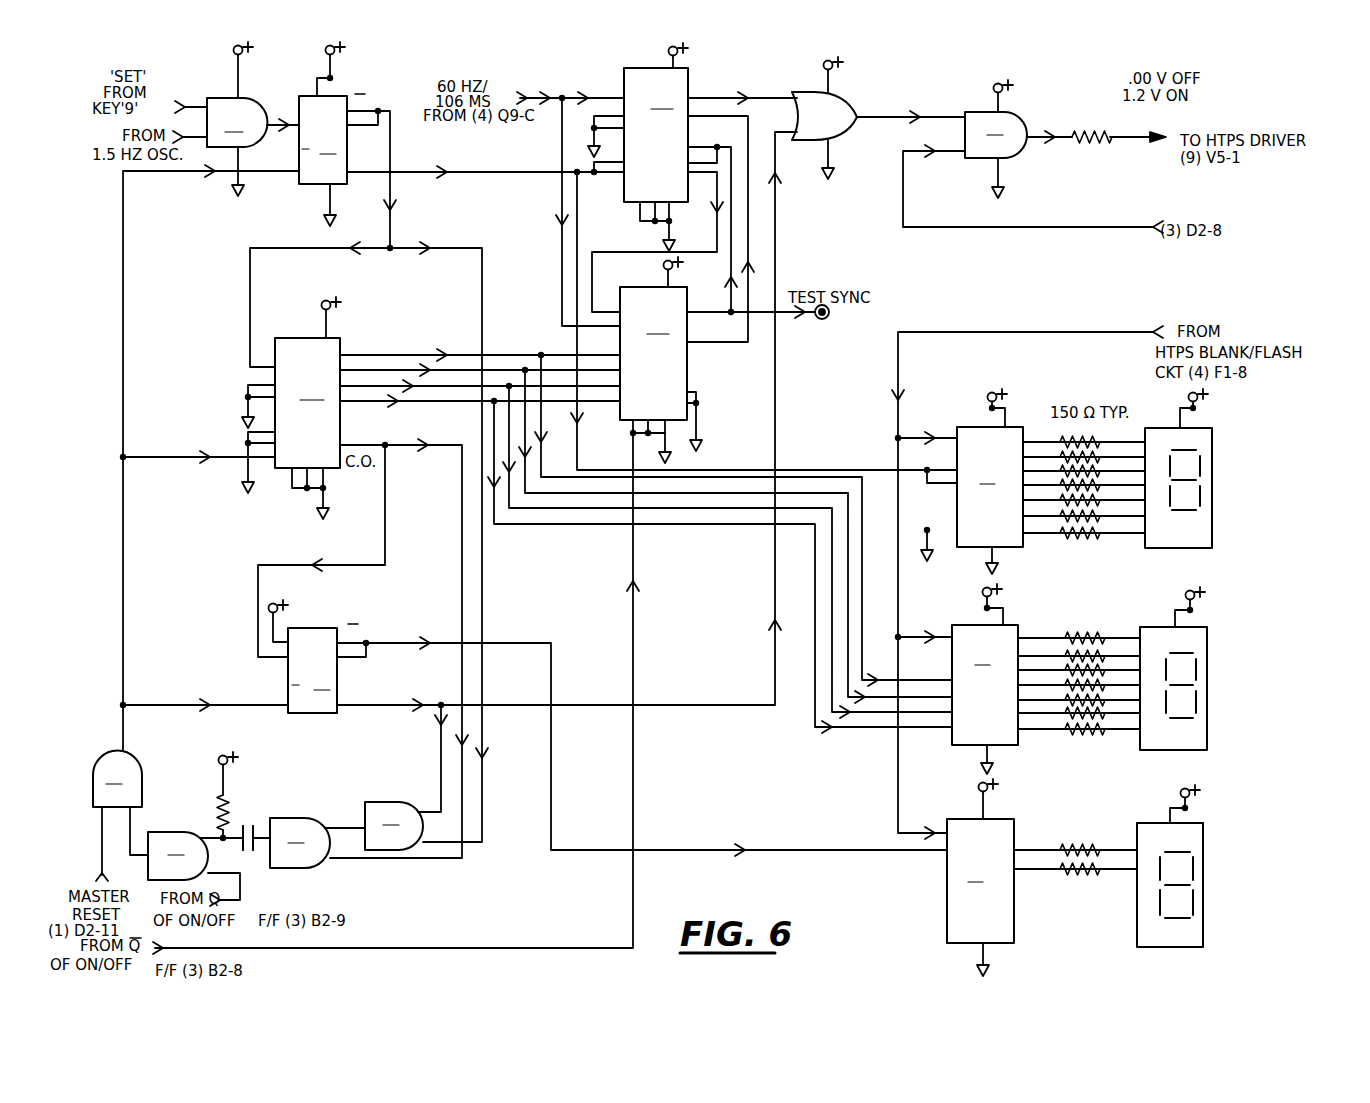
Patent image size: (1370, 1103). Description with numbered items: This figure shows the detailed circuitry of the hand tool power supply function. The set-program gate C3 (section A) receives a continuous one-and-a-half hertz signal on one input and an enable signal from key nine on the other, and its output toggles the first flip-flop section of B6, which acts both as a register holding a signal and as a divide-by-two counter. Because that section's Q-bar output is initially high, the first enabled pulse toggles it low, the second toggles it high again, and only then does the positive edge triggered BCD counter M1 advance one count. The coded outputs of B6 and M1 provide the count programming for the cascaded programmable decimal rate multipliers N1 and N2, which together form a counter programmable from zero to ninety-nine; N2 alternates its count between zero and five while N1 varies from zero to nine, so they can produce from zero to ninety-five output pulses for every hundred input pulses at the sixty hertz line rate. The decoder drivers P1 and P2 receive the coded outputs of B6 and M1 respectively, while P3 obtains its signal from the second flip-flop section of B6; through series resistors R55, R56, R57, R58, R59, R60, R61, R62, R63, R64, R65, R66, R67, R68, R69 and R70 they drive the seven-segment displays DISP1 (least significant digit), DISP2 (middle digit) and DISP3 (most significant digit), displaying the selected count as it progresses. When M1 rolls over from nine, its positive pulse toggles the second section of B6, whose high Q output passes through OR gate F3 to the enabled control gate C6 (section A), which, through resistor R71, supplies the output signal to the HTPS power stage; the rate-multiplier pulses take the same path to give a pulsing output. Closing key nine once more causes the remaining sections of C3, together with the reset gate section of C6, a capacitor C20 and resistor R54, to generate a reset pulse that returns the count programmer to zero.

The IC- C3 is at (285, 488).
The IC- B6 is at (331, 416).
The IC- N2 is at (676, 132).
The IC- N1 is at (676, 354).
The IC- M1 is at (323, 392).
The IC- F3 is at (832, 117).
The IC- C6 is at (573, 453).
The IC- P1 is at (1004, 500).
The IC- P2 is at (1002, 699).
The IC- P3 is at (997, 889).
The resistor 10K R54 is at (224, 805).
The resistor 150 ohm R55 is at (1081, 437).
The resistor 150 ohm R56 is at (1082, 452).
The resistor 150 ohm R57 is at (1081, 466).
The resistor 150 ohm R58 is at (1082, 480).
The resistor 150 ohm R59 is at (1081, 495).
The resistor 150 ohm R60 is at (1080, 511).
The resistor 150 ohm R61 is at (1082, 528).
The resistor 150 ohm R62 is at (1065, 633).
The resistor 150 ohm R63 is at (1065, 651).
The resistor 150 ohm R64 is at (1065, 665).
The resistor 150 ohm R65 is at (1065, 680).
The resistor 150 ohm R66 is at (1065, 695).
The resistor 150 ohm R67 is at (1065, 708).
The resistor 150 ohm R68 is at (1065, 724).
The resistor 150 ohm R69 is at (1061, 844).
The resistor 150 ohm R70 is at (1061, 864).
The resistor 270 ohm R71 is at (1092, 135).
The capacitor .01 C20 is at (245, 843).
The display 1 DISP1 is at (1208, 489).
The display 2 DISP2 is at (1206, 690).
The display 3 DISP3 is at (1202, 885).